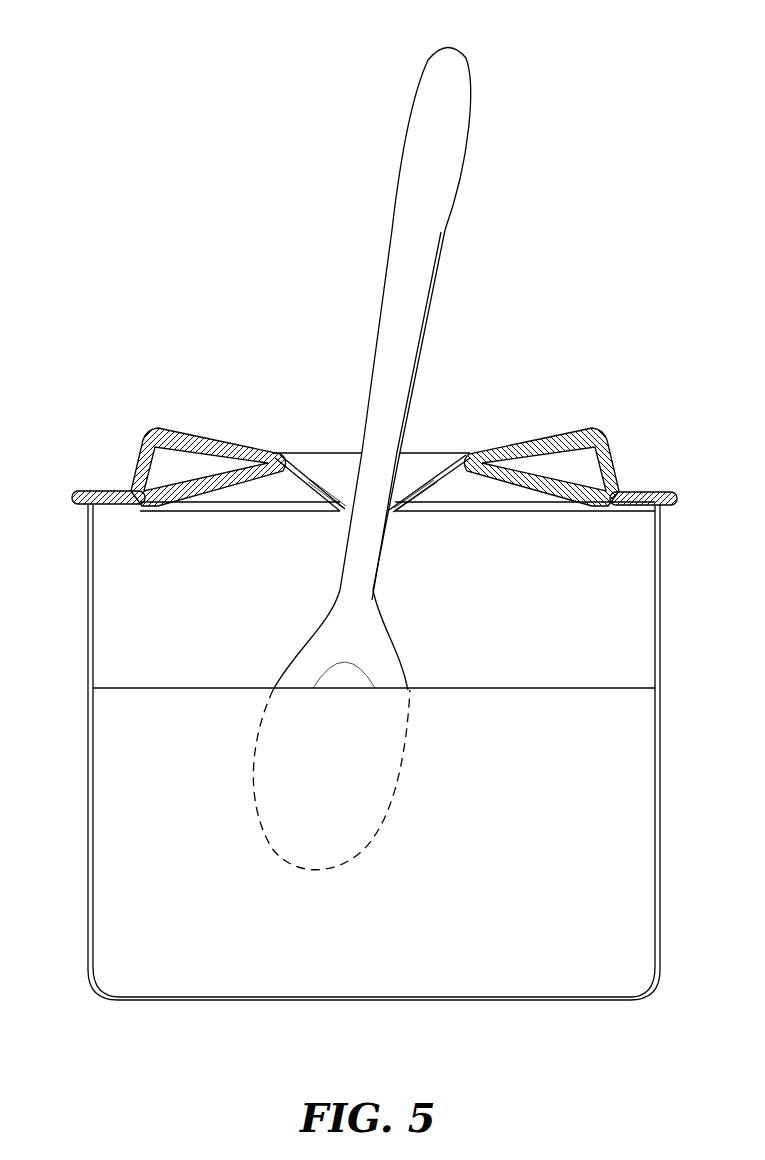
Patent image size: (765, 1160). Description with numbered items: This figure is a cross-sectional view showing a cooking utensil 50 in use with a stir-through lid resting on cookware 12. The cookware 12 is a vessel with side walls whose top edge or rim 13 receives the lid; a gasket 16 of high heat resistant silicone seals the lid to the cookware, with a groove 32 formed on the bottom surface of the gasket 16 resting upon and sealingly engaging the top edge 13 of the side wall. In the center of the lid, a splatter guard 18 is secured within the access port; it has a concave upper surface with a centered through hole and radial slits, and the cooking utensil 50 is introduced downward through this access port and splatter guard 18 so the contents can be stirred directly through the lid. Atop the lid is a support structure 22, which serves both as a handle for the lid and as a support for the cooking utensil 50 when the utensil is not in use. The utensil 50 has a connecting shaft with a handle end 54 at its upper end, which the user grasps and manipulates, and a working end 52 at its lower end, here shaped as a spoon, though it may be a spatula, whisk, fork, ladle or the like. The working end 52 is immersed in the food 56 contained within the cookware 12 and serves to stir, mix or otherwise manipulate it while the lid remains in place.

The cookware 12 is at (662, 612).
The top edge or rim 13 is at (78, 493).
The gasket 16 is at (660, 490).
The splatter guard 18 is at (325, 446).
The support structure 22 is at (136, 462).
The groove 32 is at (664, 506).
The cooking utensil 50 is at (372, 368).
The working end 52 is at (305, 666).
The handle end 54 is at (437, 78).
The food 56 is at (630, 833).